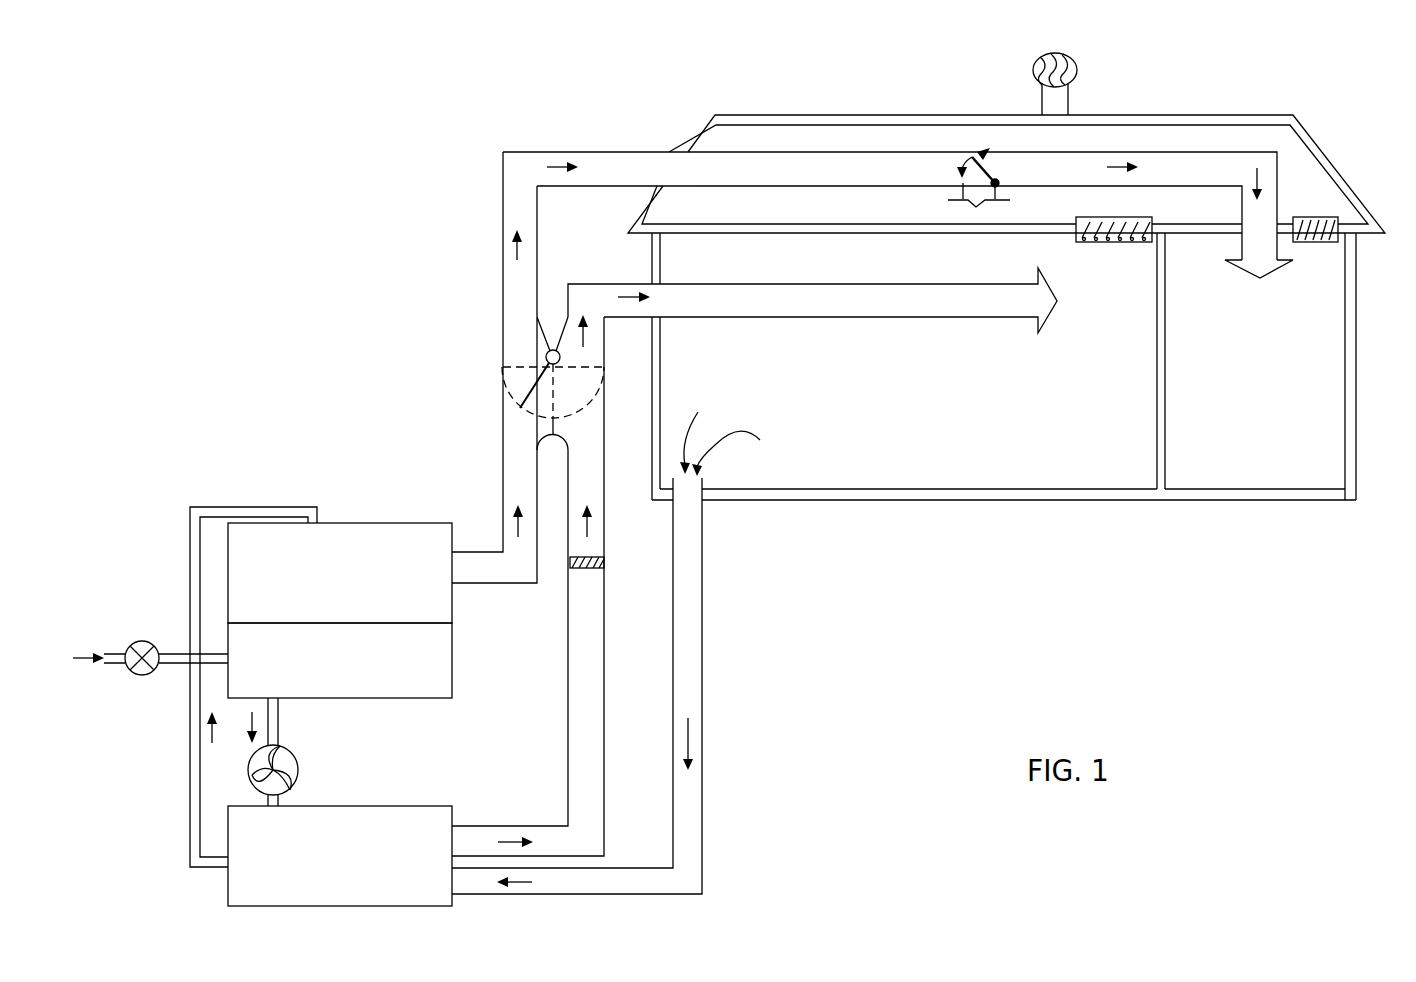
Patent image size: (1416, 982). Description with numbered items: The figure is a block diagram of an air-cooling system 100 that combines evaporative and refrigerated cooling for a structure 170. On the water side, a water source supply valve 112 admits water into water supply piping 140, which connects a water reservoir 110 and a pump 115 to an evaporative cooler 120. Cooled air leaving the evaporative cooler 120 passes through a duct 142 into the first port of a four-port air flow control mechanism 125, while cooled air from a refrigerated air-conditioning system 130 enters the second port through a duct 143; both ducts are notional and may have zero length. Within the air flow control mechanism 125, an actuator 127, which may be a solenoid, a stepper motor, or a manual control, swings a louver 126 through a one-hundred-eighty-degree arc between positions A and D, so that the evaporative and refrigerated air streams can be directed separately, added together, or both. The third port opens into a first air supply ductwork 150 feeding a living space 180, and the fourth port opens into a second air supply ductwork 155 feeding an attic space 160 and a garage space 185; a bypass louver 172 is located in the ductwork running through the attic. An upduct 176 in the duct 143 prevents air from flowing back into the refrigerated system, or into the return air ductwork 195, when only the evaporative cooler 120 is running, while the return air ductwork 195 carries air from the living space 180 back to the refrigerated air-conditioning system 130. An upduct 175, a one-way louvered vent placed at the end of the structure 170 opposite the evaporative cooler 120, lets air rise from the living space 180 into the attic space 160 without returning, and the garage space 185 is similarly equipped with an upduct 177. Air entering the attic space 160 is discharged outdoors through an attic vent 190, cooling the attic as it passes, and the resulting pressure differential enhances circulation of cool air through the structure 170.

The air-cooling system 100 is at (433, 79).
The water reservoir 110 is at (452, 665).
The water source supply valve 112 is at (158, 642).
The pump 115 is at (298, 778).
The evaporative cooler 120 is at (372, 523).
The air flow control mechanism 125 is at (426, 367).
The louver 126 is at (510, 394).
The actuator 127 is at (548, 351).
The refrigerated air-conditioning system 130 is at (377, 806).
The water supply piping 140 is at (178, 665).
The duct 142 is at (472, 583).
The duct 143 is at (568, 748).
The first air supply ductwork 150 is at (825, 284).
The second air supply ductwork 155 is at (665, 152).
The attic space 160 is at (748, 216).
The structure 170 is at (876, 92).
The bypass louver 172 is at (950, 200).
The upduct 175 is at (1076, 236).
The upduct 176 is at (604, 562).
The upduct 177 is at (1318, 243).
The living space 180 is at (927, 373).
The garage space 185 is at (1276, 370).
The attic vent 190 is at (1077, 58).
The return air ductwork 195 is at (703, 548).